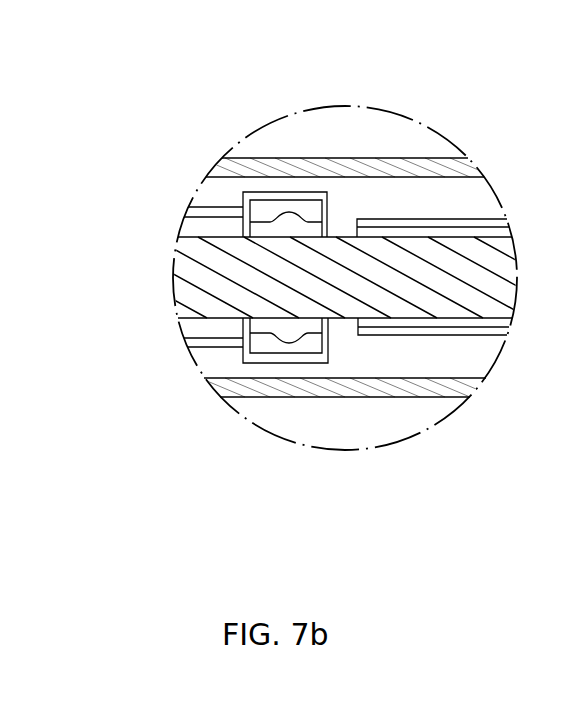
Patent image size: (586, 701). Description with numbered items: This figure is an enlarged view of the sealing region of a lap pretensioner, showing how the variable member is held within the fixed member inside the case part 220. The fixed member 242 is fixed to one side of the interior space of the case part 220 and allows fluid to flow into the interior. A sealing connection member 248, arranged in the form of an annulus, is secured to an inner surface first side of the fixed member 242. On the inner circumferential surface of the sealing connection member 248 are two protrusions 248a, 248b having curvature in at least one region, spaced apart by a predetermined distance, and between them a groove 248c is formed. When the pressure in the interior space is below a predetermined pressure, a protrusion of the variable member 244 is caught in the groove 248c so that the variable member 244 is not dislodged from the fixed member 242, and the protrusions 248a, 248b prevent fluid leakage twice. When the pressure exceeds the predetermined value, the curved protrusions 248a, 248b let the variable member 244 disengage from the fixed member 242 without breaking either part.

The case part 220 is at (355, 165).
The fixed member 242 is at (231, 343).
The variable member 244 is at (378, 330).
The sealing connection member 248 is at (296, 363).
The protrusion 248a is at (243, 236).
The protrusion 248b is at (248, 284).
The groove 248c is at (287, 208).